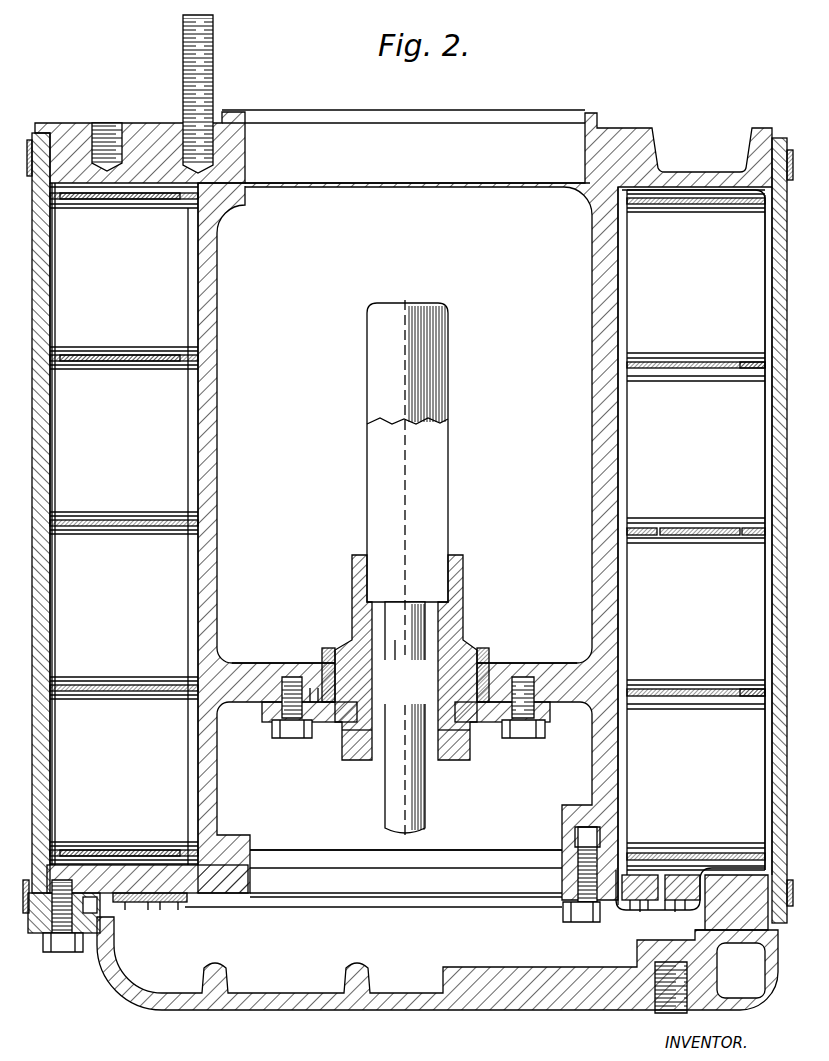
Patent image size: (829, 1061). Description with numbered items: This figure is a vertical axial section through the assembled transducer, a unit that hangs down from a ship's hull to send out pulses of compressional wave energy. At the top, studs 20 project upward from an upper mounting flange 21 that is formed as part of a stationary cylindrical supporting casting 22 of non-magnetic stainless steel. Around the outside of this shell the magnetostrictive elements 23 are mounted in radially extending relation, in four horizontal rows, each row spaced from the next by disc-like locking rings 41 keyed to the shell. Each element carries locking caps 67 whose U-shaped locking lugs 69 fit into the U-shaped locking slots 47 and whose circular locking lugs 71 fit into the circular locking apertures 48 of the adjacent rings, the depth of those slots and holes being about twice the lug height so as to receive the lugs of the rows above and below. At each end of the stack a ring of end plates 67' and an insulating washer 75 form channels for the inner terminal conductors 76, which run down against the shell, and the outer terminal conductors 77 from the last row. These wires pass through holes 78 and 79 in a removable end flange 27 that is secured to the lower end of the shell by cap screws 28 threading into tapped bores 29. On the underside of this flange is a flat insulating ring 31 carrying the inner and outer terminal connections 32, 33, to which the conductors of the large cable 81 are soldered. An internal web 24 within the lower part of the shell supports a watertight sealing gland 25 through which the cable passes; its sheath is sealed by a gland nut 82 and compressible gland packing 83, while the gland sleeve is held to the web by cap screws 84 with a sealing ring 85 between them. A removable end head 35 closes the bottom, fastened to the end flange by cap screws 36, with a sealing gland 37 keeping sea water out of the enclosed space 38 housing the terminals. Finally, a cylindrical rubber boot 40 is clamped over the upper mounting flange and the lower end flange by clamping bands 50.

The stud 20 is at (182, 40).
The upper mounting flange 21 is at (148, 137).
The cylindrical supporting casting 22 is at (598, 243).
The magnetostrictive element 23 is at (134, 284).
The internal web 24 is at (240, 682).
The sealing gland 25 is at (352, 612).
The removable end flange 27 is at (255, 880).
The cap screw 28 is at (570, 905).
The tapped bore 29 is at (575, 836).
The insulating ring 31 is at (155, 905).
The inner terminal connection 32 is at (182, 910).
The outer terminal connection 33 is at (128, 908).
The end head 35 is at (280, 1005).
The cap screw 36 is at (60, 946).
The sealing gland 37 is at (88, 916).
The enclosed space 38 is at (413, 959).
The rubber boot 40 is at (790, 190).
The locking ring 41 is at (181, 200).
The U-shaped locking slot 47 is at (752, 527).
The circular locking aperture 48 is at (663, 527).
The clamping band 50 is at (33, 136).
The locking cap 67 is at (412, 442).
The end plate 67' is at (120, 524).
The U-shaped locking lug 69 is at (752, 363).
The circular locking lug 71 is at (672, 360).
The insulating washer 75 is at (83, 190).
The inner terminal conductor 76 is at (619, 240).
The outer terminal conductor 77 is at (731, 865).
The hole 78 is at (640, 876).
The hole 79 is at (690, 875).
The cable 81 is at (440, 401).
The gland nut 82 is at (460, 762).
The gland packing 83 is at (505, 652).
The cap screw 84 is at (292, 740).
The sealing ring 85 is at (320, 722).